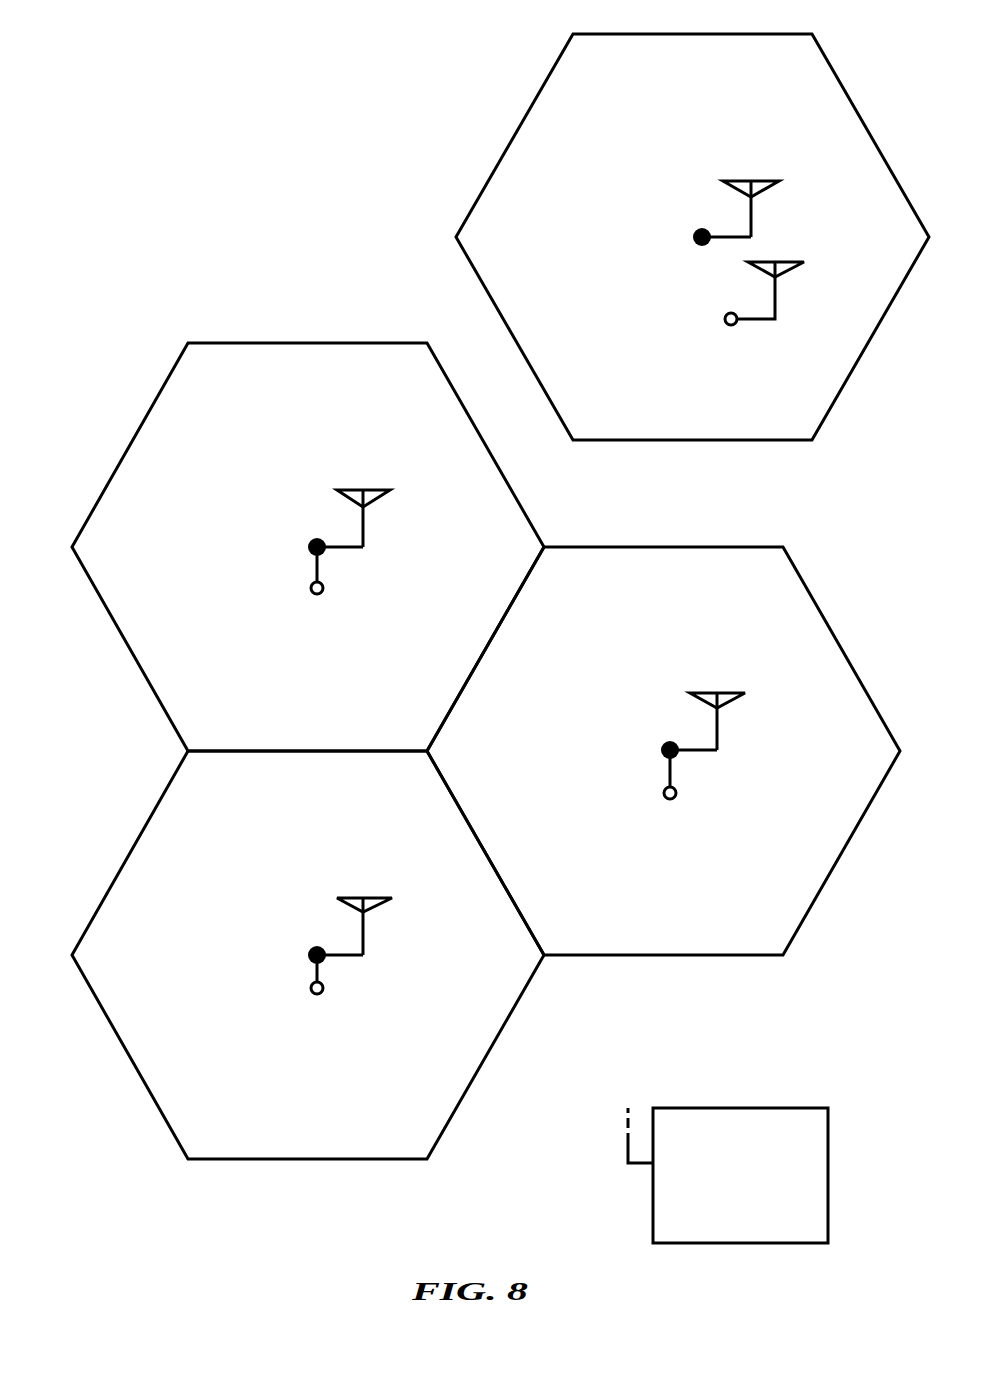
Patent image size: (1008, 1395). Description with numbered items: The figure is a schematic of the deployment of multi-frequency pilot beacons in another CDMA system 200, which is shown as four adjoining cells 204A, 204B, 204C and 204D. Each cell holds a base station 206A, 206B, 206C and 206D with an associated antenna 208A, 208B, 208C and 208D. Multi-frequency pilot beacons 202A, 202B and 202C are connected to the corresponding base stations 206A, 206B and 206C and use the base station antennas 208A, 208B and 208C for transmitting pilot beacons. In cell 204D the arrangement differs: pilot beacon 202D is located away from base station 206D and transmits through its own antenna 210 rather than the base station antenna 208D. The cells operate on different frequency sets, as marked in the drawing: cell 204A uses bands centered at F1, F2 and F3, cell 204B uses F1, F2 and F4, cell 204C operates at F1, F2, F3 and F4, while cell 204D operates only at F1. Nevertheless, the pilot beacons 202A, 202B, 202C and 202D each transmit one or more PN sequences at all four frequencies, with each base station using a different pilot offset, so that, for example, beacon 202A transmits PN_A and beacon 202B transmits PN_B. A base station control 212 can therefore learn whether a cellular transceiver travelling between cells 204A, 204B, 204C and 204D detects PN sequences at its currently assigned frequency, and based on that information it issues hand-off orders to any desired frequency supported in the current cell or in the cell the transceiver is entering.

The CDMA system 200 is at (256, 130).
The multi-frequency pilot beacon 202A is at (317, 594).
The multi-frequency pilot beacon 202B is at (317, 995).
The multi-frequency pilot beacon 202C is at (670, 800).
The multi-frequency pilot beacon 202D is at (731, 325).
The cell 204A is at (257, 342).
The cell 204B is at (127, 858).
The cell 204C is at (603, 545).
The cell 204D is at (507, 149).
The base station 206A is at (310, 540).
The base station 206B is at (310, 950).
The base station 206C is at (663, 745).
The base station 206D is at (695, 232).
The antenna 208A is at (365, 490).
The antenna 208B is at (365, 898).
The antenna 208C is at (715, 692).
The antenna 208D is at (752, 181).
The antenna 210 is at (790, 267).
The base station control 212 is at (718, 1108).